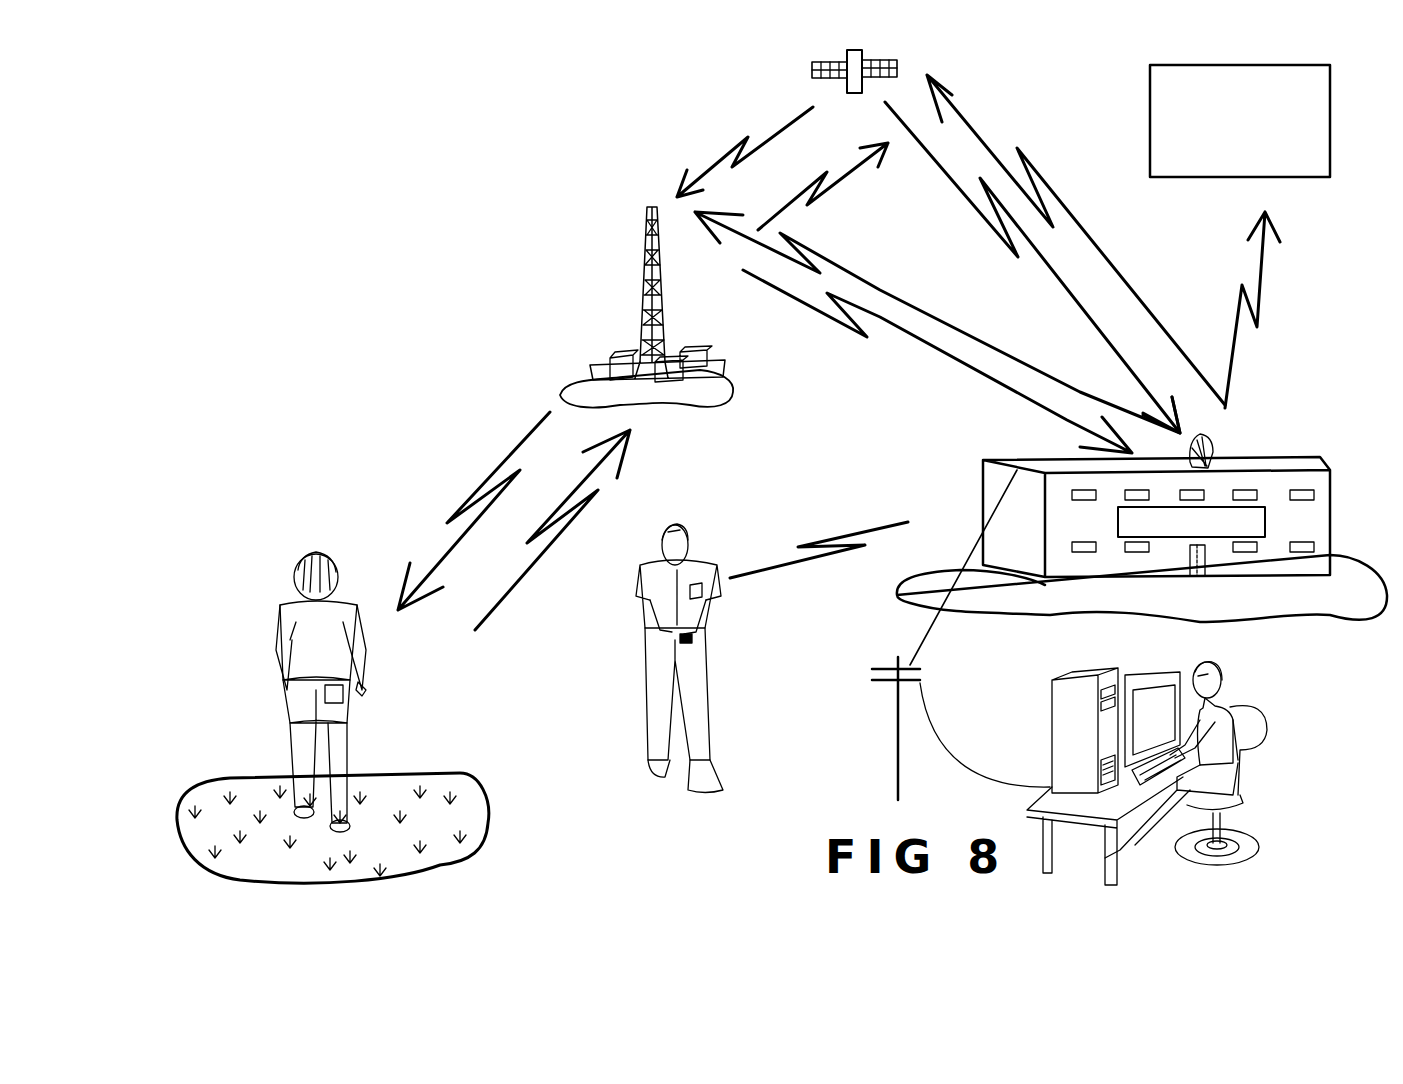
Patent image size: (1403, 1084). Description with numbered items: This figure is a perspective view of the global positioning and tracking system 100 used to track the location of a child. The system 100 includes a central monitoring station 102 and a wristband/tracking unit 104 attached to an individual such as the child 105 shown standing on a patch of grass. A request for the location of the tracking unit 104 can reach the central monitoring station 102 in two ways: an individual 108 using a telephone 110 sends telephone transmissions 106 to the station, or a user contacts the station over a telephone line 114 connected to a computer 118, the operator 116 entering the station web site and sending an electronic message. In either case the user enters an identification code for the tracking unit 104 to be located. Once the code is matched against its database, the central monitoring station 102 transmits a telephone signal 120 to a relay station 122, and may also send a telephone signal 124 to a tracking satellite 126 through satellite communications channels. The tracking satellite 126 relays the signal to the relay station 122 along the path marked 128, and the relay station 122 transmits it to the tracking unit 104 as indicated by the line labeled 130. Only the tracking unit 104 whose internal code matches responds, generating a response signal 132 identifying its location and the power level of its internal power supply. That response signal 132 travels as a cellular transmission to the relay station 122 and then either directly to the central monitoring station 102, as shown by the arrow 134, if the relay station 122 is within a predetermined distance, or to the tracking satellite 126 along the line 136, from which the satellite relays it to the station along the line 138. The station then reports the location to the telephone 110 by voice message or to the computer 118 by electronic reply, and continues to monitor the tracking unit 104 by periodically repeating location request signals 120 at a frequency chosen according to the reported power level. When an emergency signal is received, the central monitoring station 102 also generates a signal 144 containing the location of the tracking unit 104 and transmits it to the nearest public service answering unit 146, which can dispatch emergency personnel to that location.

The global positioning and tracking system 100 is at (435, 268).
The central monitoring station 102 is at (1252, 460).
The wristband/tracking unit 104 is at (367, 683).
The child 105 is at (287, 602).
The telephone transmissions 106 is at (867, 530).
The individual 108 is at (703, 557).
The telephone 110 is at (673, 640).
The telephone line 114 is at (978, 540).
The computer / person using computer 116 is at (1220, 690).
The computer 118 is at (1050, 700).
The telephone signal (location request signal) 120 is at (860, 273).
The relay station 122 is at (662, 313).
The telephone signal to satellite 124 is at (1107, 265).
The tracking satellite 126 is at (847, 62).
The satellite-to-relay-station signal 128 is at (737, 148).
The telephone signal to tracking unit 130 is at (507, 457).
The response signal 132 is at (540, 558).
The response signal to central monitoring station 134 is at (913, 342).
The location signal to satellite 136 is at (807, 187).
The satellite relay to central monitoring station 138 is at (972, 208).
The emergency signal 144 is at (1260, 293).
The public service answering unit 146 is at (1320, 114).